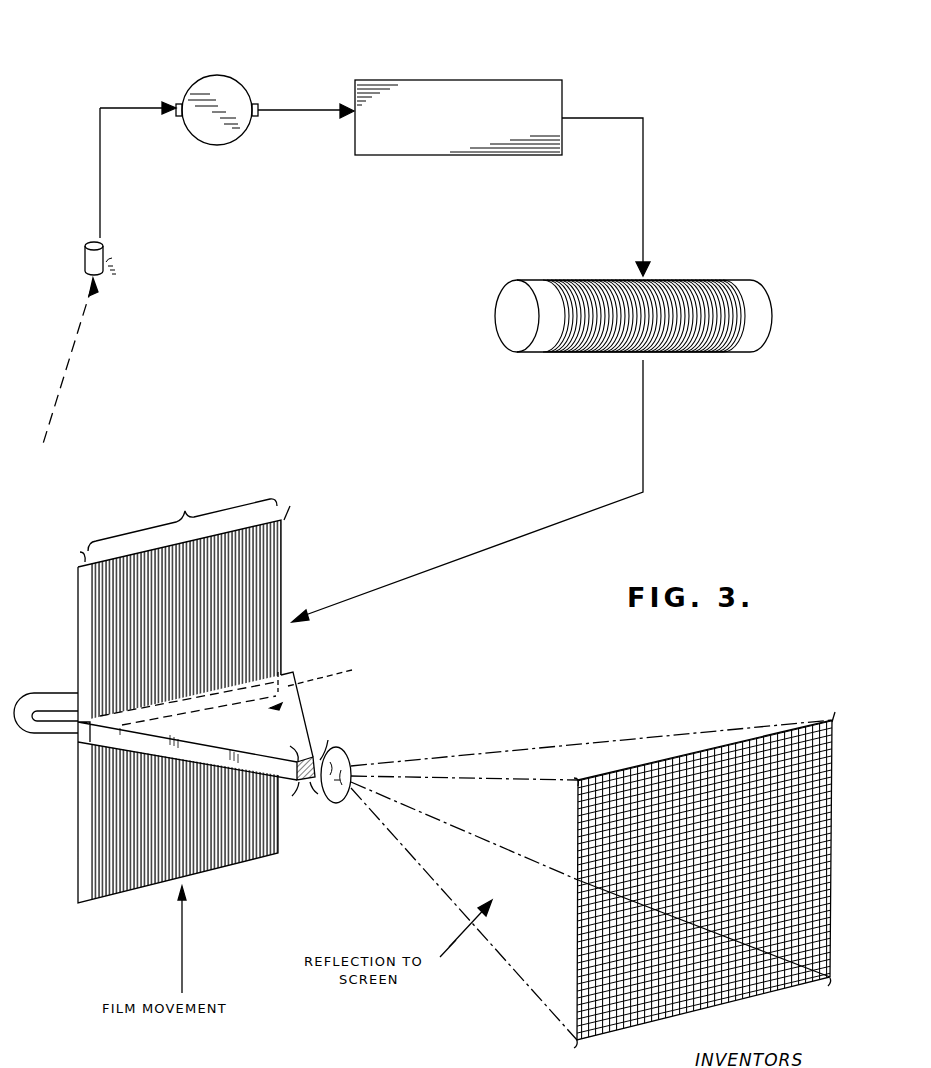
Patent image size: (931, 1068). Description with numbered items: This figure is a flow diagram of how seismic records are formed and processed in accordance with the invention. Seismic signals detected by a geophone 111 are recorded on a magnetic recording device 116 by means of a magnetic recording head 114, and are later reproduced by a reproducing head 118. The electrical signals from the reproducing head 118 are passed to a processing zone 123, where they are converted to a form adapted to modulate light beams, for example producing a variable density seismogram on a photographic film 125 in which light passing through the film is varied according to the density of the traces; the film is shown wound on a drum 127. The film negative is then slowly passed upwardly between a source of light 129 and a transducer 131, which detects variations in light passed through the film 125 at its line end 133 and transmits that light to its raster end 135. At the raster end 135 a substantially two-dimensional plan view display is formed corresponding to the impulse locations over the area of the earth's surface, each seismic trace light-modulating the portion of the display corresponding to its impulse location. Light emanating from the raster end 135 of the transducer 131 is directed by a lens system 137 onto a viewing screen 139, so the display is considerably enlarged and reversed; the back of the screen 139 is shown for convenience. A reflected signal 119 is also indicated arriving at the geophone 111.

The geophone 111 is at (104, 250).
The magnetic recording head 114 is at (178, 117).
The magnetic recording device 116 is at (216, 84).
The reproducing head 118 is at (255, 117).
The reflected signal 119 is at (72, 352).
The processing zone 123 is at (504, 90).
The film 125 is at (232, 590).
The drum 127 is at (770, 300).
The source of light 129 is at (48, 705).
The transducer 131 is at (300, 722).
The line end 133 is at (343, 669).
The raster end 135 is at (315, 784).
The lens system 137 is at (355, 762).
The viewing screen 139 is at (724, 730).